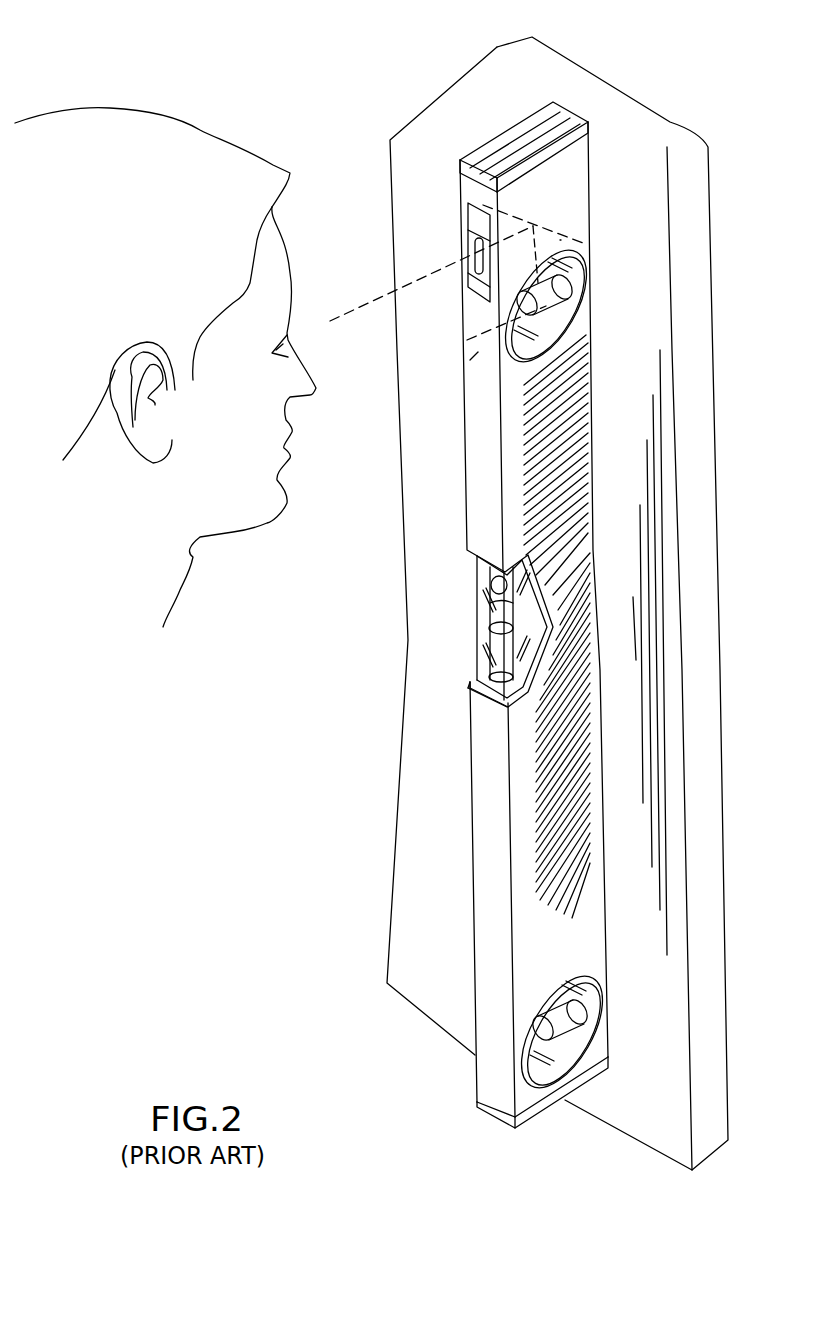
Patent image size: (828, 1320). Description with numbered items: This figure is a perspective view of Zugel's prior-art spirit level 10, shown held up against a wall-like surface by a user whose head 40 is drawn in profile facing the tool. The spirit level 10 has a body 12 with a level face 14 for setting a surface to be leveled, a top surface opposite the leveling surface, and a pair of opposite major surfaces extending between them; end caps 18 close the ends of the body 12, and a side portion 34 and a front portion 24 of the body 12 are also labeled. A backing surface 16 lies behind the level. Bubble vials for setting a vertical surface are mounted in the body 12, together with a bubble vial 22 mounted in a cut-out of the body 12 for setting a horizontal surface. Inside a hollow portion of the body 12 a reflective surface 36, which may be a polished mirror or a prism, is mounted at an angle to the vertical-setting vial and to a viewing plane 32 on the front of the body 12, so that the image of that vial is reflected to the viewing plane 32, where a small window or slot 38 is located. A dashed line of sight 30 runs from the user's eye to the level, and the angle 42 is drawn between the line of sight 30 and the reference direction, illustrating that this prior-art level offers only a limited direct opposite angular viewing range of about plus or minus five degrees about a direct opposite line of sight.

The spirit level 10 is at (356, 140).
The body 12 is at (486, 632).
The level face 14 is at (590, 205).
The wall / workpiece 16 is at (607, 118).
The end cap 18 is at (462, 162).
The bubble vial 22 is at (480, 623).
The front face 24 is at (477, 345).
The line of sight 30 is at (510, 212).
The viewing plane 32 is at (453, 253).
The body side 34 is at (475, 467).
The reflective surface 36 is at (574, 239).
The indicator slot 38 is at (472, 283).
The user head 40 is at (150, 125).
The viewing angle 42 is at (519, 254).